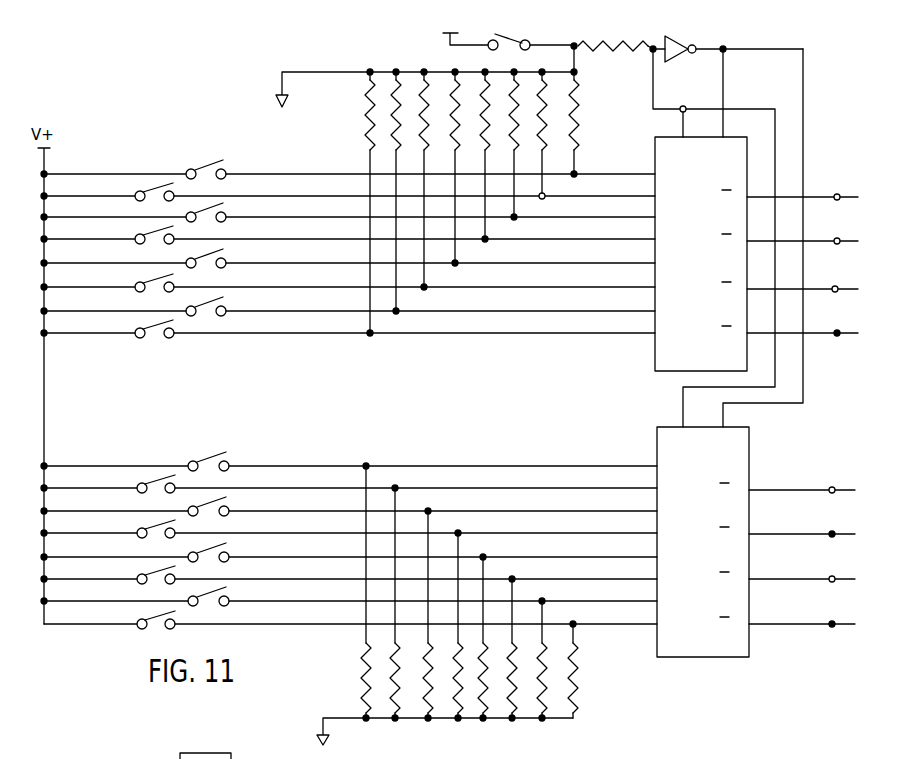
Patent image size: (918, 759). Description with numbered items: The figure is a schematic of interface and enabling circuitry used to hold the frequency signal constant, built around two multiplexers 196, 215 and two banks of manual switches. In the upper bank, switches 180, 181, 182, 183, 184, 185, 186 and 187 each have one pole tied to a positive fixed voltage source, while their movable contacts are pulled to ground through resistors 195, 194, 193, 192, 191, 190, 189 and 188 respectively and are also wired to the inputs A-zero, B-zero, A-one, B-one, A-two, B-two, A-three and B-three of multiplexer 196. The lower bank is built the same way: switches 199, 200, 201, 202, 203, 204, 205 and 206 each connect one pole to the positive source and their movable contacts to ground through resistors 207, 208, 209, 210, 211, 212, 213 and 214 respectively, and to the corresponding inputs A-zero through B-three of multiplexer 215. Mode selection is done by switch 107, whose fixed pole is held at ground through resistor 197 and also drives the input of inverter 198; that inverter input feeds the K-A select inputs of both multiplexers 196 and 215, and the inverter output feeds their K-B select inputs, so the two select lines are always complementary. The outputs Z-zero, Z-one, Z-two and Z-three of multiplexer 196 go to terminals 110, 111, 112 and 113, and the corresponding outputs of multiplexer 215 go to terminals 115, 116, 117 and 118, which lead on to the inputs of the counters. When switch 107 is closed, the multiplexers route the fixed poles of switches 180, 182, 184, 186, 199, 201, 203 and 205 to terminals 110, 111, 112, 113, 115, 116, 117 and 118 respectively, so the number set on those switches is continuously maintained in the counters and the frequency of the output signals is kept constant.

The switch 107 is at (509, 43).
The terminal 110 is at (839, 194).
The terminal 111 is at (847, 229).
The terminal 112 is at (848, 275).
The terminal 113 is at (837, 332).
The terminal 115 is at (838, 480).
The terminal 116 is at (842, 524).
The terminal 117 is at (852, 568).
The terminal 118 is at (834, 605).
The switch 180 is at (211, 159).
The switch 181 is at (146, 191).
The switch 182 is at (223, 211).
The switch 183 is at (148, 232).
The switch 184 is at (223, 257).
The switch 185 is at (148, 280).
The switch 186 is at (223, 305).
The switch 187 is at (148, 326).
The resistor 188 is at (366, 97).
The resistor 189 is at (393, 118).
The resistor 190 is at (418, 135).
The resistor 191 is at (452, 72).
The resistor 192 is at (488, 82).
The resistor 193 is at (522, 82).
The resistor 194 is at (548, 120).
The resistor 195 is at (580, 132).
The multiplexer 196 is at (663, 353).
The resistor 197 is at (641, 52).
The inverter 198 is at (684, 36).
The switch 199 is at (220, 457).
The switch 200 is at (165, 481).
The switch 201 is at (220, 504).
The switch 202 is at (170, 528).
The switch 203 is at (220, 549).
The switch 204 is at (172, 571).
The switch 205 is at (220, 594).
The switch 206 is at (173, 616).
The resistor 207 is at (362, 651).
The resistor 208 is at (389, 698).
The resistor 209 is at (428, 696).
The resistor 210 is at (457, 698).
The resistor 211 is at (483, 695).
The resistor 212 is at (513, 698).
The resistor 213 is at (542, 705).
The resistor 214 is at (576, 680).
The multiplexer 215 is at (665, 438).